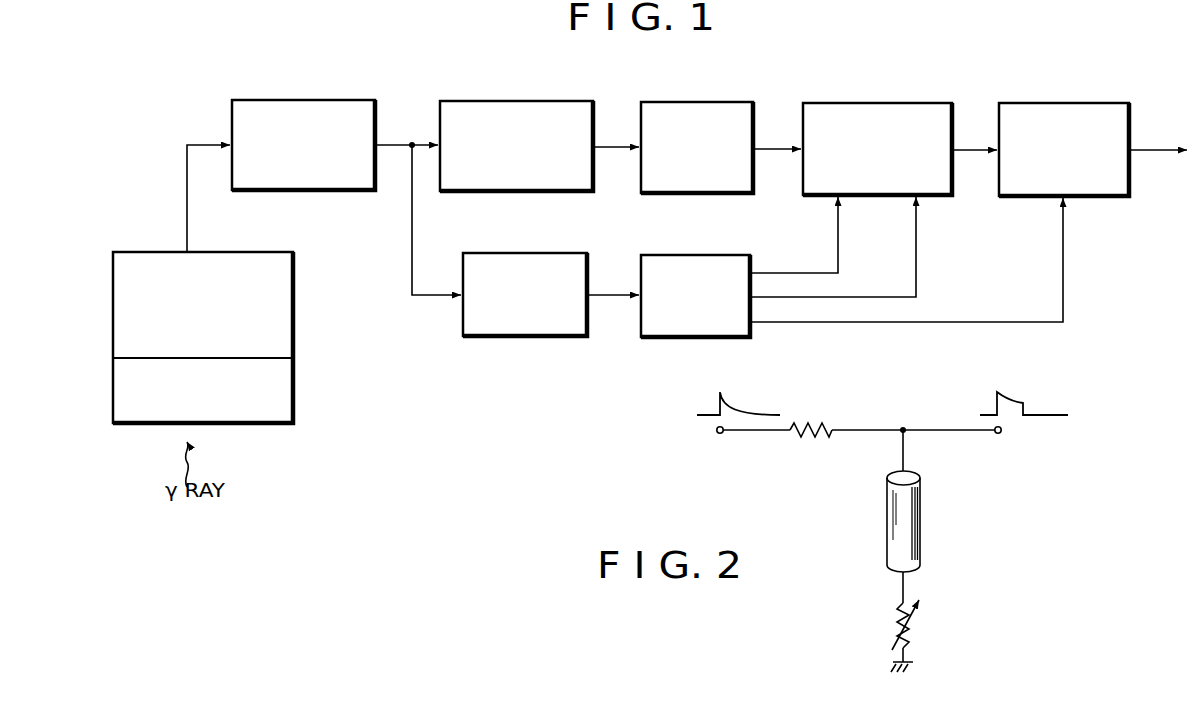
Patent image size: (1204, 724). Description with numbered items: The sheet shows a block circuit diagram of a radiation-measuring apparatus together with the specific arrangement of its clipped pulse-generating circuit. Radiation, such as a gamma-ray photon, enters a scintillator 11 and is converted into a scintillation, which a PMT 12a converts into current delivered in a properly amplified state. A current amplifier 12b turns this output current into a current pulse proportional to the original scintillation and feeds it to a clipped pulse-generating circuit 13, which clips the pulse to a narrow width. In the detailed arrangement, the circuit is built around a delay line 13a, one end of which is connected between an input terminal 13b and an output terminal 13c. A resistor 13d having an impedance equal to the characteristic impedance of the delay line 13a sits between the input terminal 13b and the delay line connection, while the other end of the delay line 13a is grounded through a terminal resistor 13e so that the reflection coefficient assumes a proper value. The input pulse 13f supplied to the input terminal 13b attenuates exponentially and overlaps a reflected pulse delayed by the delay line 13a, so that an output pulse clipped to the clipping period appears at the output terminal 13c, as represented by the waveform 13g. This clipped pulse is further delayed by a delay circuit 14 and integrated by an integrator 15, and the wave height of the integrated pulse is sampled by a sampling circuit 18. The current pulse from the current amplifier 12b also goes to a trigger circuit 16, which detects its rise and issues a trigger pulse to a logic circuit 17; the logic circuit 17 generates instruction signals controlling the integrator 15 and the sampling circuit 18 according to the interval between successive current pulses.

In FIG. 1, the scintillator 11 is at (283, 399).
In FIG. 1, the PMT 12a is at (239, 265).
In FIG. 1, the current amplifier 12b is at (282, 108).
In FIG. 1, the clipped pulse-generating circuit 13 is at (496, 104).
In FIG. 1, the delay circuit 14 is at (735, 108).
In FIG. 1, the integrator 15 is at (917, 110).
In FIG. 1, the trigger circuit 16 is at (555, 263).
In FIG. 1, the logic circuit 17 is at (726, 264).
In FIG. 1, the sampling circuit 18 is at (1107, 110).
In FIG. 2, the delay line 13a is at (921, 527).
In FIG. 2, the input terminal 13b is at (719, 435).
In FIG. 2, the output terminal 13c is at (999, 435).
In FIG. 2, the resistor 13d is at (817, 421).
In FIG. 2, the terminal resistor 13e is at (919, 617).
In FIG. 2, the input pulse 13f is at (736, 405).
In FIG. 2, the waveform 13g is at (1018, 393).